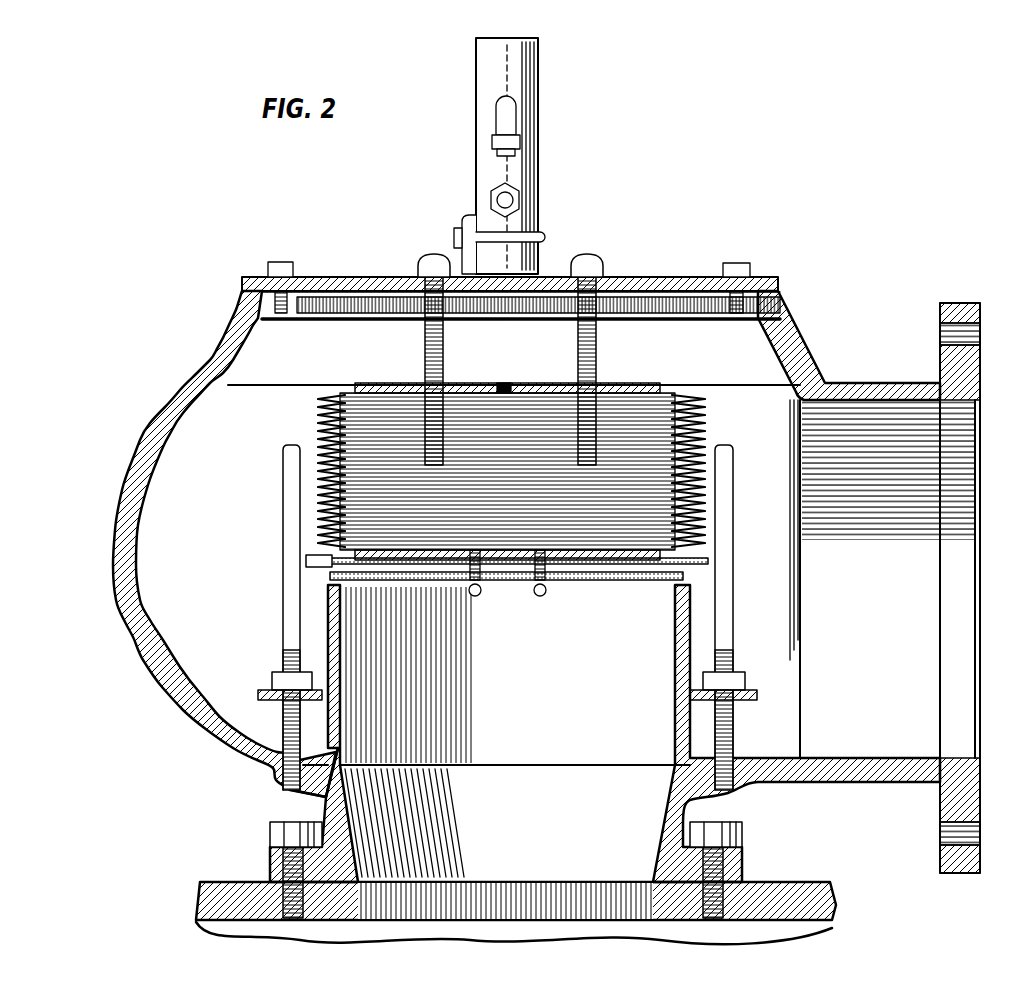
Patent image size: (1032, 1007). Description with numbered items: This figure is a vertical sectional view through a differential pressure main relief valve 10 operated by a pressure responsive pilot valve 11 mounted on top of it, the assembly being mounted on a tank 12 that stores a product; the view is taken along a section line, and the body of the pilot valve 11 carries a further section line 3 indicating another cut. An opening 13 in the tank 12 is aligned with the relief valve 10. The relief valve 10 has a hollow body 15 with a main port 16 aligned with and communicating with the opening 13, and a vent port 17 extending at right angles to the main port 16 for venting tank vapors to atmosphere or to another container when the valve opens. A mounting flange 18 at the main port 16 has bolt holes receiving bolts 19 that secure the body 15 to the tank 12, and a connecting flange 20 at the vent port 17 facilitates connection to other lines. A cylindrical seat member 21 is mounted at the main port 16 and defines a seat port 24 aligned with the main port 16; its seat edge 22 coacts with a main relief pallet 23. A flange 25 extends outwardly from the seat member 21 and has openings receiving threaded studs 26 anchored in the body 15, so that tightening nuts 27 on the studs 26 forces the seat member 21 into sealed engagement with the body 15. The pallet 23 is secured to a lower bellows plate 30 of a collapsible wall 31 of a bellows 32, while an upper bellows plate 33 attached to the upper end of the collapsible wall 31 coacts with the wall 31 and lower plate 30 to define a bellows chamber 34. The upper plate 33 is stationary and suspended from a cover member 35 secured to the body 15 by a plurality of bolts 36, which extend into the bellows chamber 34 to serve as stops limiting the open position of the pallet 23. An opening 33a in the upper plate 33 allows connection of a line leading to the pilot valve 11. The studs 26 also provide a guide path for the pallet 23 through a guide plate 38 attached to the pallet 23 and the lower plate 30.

The section line 3- 3 is at (480, 27).
The differential pressure main relief valve 10 is at (765, 290).
The pressure responsive pilot valve 11 is at (548, 132).
The tank 12 is at (802, 882).
The opening 13 is at (640, 920).
The hollow body 15 is at (185, 690).
The main port 16 is at (345, 808).
The vent port 17 is at (812, 383).
The mounting flange 18 is at (278, 860).
The bolts 19 is at (288, 834).
The connecting flange 20 is at (955, 303).
The cylindrical seat member 21 is at (682, 660).
The seat edge 22 is at (680, 582).
The main relief pallet 23 is at (480, 592).
The seat port 24 is at (549, 666).
The flange 25 is at (757, 698).
The threaded studs 26 is at (733, 640).
The nuts 27 is at (738, 682).
The lower bellows plate 30 is at (576, 566).
The collapsible wall 31 is at (300, 522).
The bellows 32 is at (320, 490).
The upper bellows plate 33 is at (390, 383).
The opening 33a is at (510, 383).
The bellows chamber 34 is at (519, 472).
The cover member 35 is at (655, 278).
The bolts 36 is at (432, 262).
The guide plate 38 is at (306, 566).